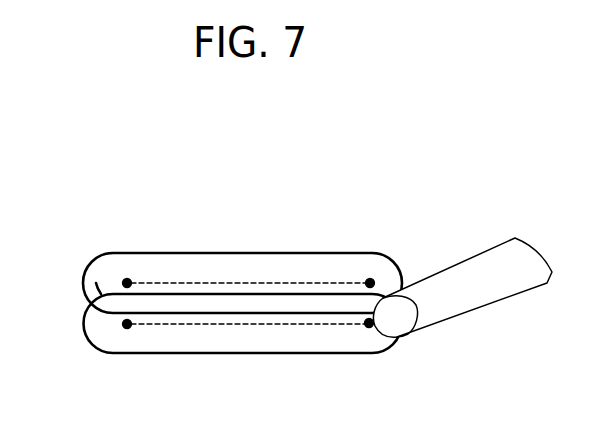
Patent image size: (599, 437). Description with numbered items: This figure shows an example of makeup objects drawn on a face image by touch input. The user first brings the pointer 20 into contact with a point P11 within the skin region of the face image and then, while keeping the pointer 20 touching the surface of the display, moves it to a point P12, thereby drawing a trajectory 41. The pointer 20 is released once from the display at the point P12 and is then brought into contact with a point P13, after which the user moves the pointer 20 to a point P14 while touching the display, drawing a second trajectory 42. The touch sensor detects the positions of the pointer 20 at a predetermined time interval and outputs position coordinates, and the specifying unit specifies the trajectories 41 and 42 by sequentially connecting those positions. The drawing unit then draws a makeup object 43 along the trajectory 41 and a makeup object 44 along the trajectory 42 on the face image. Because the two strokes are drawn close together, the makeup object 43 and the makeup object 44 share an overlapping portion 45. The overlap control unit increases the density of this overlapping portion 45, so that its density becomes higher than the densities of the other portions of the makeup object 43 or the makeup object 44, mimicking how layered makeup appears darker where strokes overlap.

The pointer 20 is at (443, 307).
The trajectory 41 is at (287, 283).
The trajectory 42 is at (233, 324).
The makeup object 43 is at (222, 253).
The makeup object 44 is at (157, 353).
The overlapping portion 45 is at (101, 295).
The point P11 is at (127, 283).
The point P12 is at (370, 283).
The point P13 is at (127, 324).
The point P14 is at (369, 323).